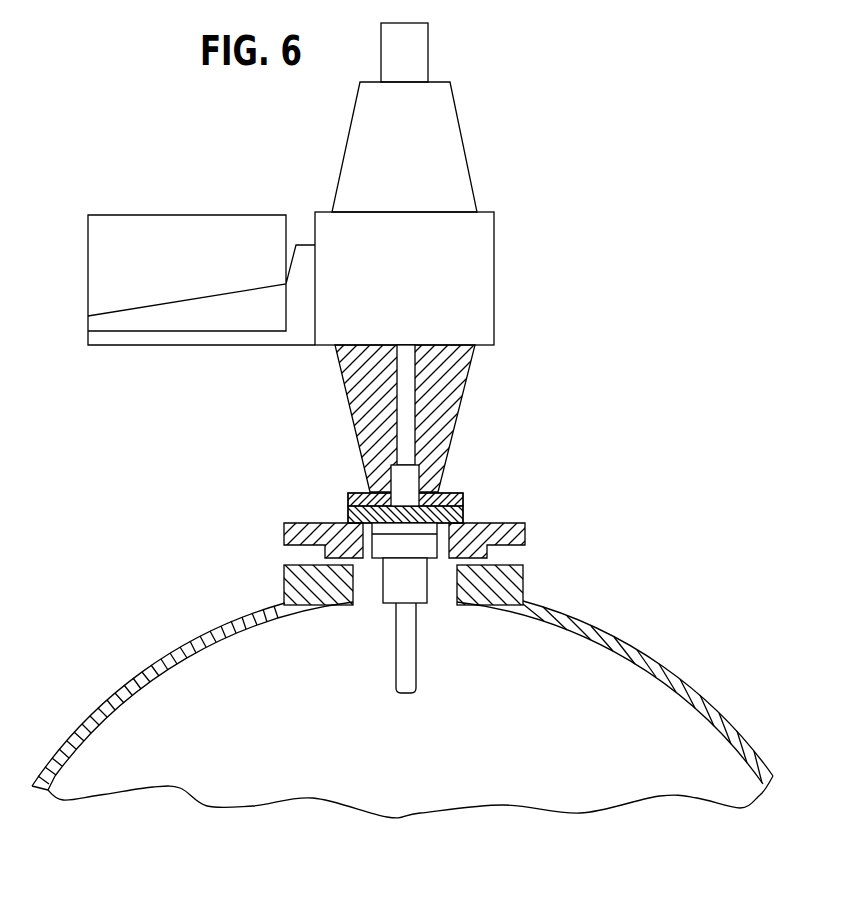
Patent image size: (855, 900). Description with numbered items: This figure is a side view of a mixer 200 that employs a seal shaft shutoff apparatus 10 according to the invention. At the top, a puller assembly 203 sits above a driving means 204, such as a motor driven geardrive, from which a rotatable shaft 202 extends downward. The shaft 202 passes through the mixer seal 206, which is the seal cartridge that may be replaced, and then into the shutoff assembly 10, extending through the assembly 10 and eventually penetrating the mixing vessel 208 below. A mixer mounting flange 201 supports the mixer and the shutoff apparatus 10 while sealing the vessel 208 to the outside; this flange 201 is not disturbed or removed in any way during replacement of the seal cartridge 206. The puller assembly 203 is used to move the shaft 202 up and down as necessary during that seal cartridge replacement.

The mixer 200 is at (567, 107).
The mixer mounting flange 201 is at (523, 532).
The rotatable shaft 202 is at (416, 395).
The puller assembly 203 is at (428, 60).
The driving means 204 is at (494, 233).
The mixer seal 206 is at (438, 462).
The mixing vessel 208 is at (580, 615).
The seal shaft shutoff apparatus 10 is at (463, 513).